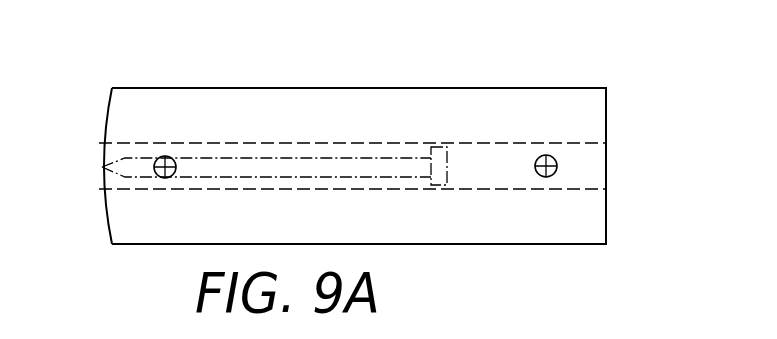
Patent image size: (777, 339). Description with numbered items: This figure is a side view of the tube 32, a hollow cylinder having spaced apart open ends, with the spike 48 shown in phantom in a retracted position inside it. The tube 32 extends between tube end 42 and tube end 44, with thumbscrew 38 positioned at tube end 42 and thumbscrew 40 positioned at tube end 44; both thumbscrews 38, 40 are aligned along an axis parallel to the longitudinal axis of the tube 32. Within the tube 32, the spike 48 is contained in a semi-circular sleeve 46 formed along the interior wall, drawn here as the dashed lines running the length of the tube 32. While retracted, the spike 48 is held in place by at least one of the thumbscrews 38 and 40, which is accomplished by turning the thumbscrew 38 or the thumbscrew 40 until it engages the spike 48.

The tube 32 is at (397, 76).
The thumbscrew 38 is at (168, 156).
The thumbscrew 40 is at (547, 155).
The tube end 42 is at (94, 118).
The tube end 44 is at (610, 123).
The semi-circular sleeve 46 is at (256, 143).
The spike 48 is at (133, 174).